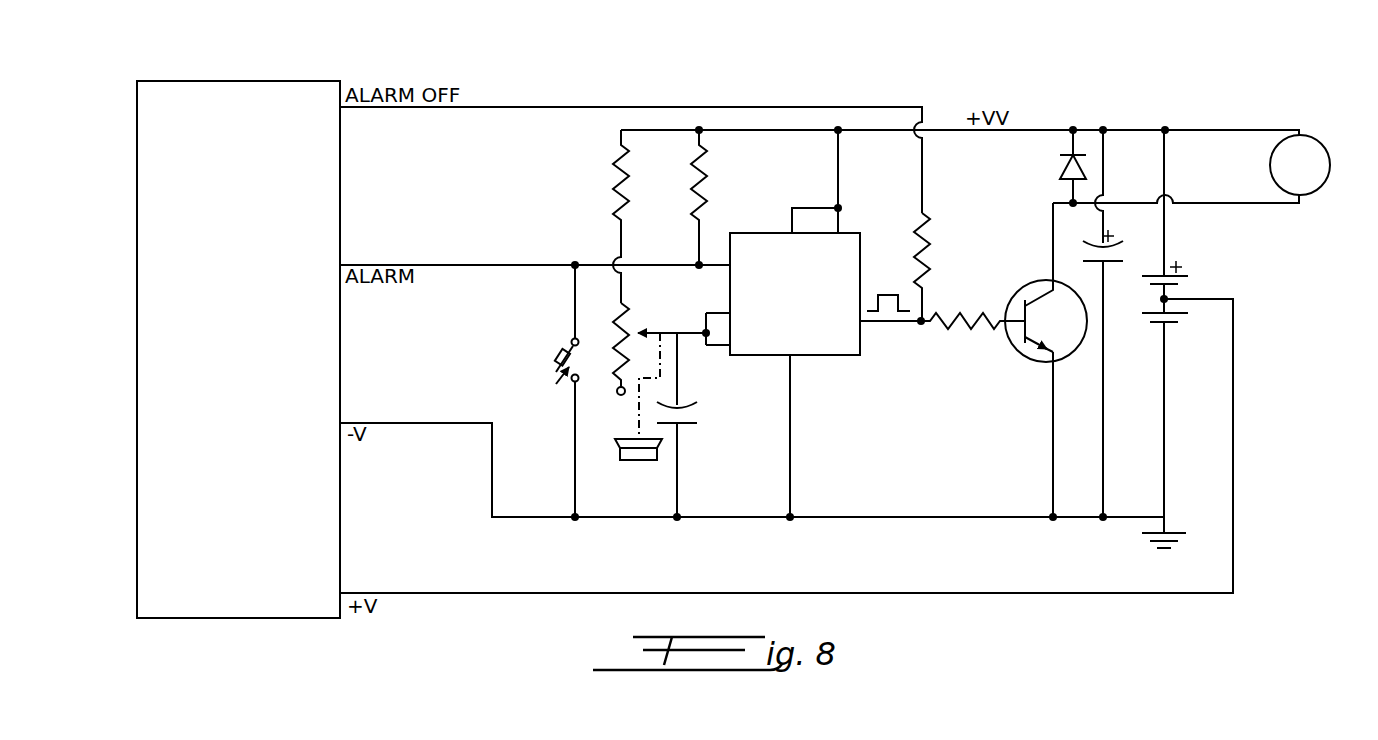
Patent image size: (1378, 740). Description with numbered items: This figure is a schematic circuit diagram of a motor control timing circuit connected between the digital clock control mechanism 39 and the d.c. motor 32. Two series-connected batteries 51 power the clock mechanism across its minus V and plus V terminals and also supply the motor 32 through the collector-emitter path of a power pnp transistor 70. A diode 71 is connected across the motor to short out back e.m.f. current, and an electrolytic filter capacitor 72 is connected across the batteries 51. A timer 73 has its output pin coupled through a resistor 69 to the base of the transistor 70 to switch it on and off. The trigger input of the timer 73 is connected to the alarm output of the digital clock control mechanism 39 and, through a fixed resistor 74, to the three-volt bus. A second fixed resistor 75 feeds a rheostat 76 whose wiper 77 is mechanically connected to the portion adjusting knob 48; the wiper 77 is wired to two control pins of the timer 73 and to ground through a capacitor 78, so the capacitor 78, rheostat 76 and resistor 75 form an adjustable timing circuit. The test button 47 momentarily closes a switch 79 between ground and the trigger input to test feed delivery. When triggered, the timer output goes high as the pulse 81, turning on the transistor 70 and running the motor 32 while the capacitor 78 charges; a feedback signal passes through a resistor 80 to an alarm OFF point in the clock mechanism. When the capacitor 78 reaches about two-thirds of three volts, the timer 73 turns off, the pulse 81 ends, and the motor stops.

The digital clock control mechanism 39 is at (218, 81).
The d.c. motor 32 is at (1321, 146).
The diode 71 is at (1060, 167).
The electrolytic filter capacitor 72 is at (1117, 250).
The batteries 51 is at (1187, 283).
The fixed resistor 74 is at (703, 184).
The fixed resistor 75 is at (617, 197).
The resistor 80 is at (926, 238).
The pulse 81 is at (898, 295).
The resistor 69 is at (975, 312).
The power pnp transistor 70 is at (1020, 356).
The timer 73 is at (842, 355).
The test button 47 is at (553, 352).
The switch 79 is at (558, 384).
The wiper 77 is at (648, 330).
The rheostat 76 is at (626, 360).
The capacitor 78 is at (690, 408).
The portion adjusting knob 48 is at (626, 450).